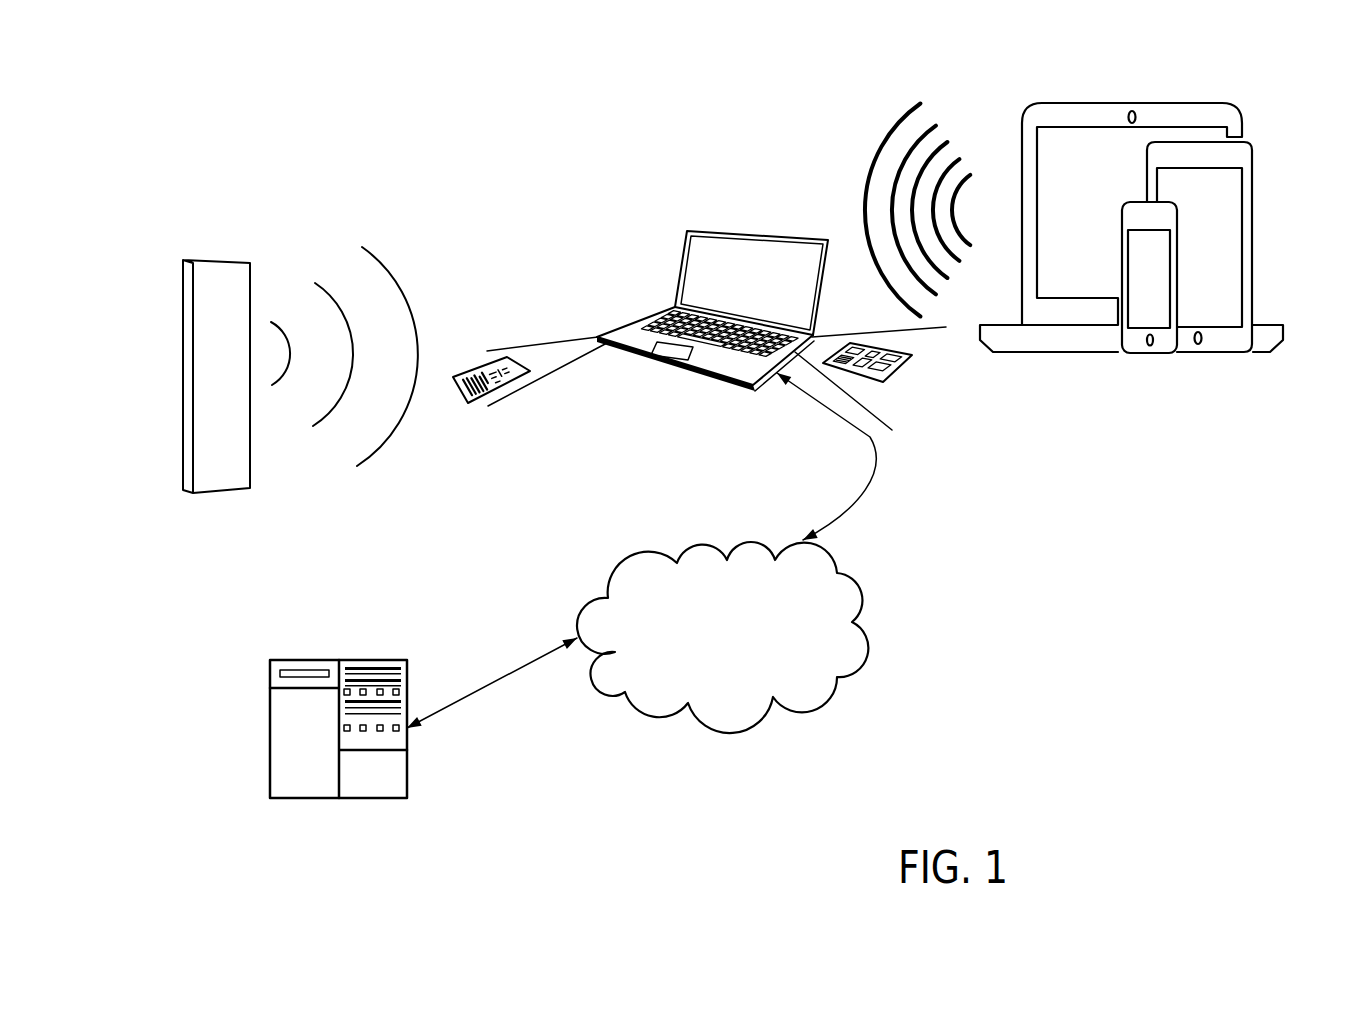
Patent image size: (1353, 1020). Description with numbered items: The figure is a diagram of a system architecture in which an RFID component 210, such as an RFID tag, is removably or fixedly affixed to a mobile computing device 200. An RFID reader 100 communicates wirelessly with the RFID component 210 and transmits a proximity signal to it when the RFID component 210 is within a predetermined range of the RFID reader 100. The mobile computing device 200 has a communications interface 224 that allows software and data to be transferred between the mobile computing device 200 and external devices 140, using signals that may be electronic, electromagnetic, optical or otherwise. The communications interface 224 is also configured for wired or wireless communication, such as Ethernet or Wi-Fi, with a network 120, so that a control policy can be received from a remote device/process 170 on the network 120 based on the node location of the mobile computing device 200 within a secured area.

The RFID reader 100 is at (219, 258).
The RFID component 210 is at (478, 365).
The mobile computing device 200 is at (645, 357).
The communications interface 224 is at (902, 370).
The external devices 140 is at (1074, 191).
The network 120 is at (722, 637).
The remote device/process 170 is at (417, 768).